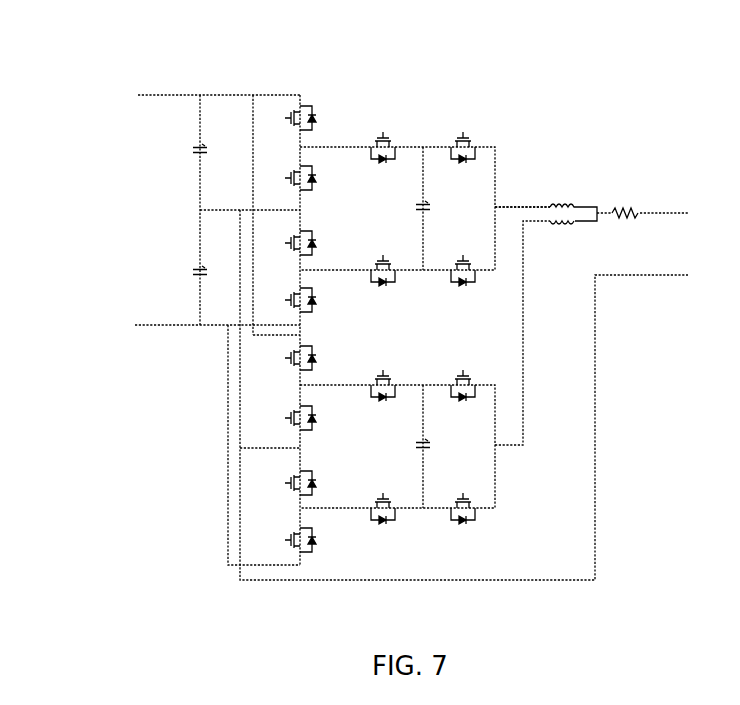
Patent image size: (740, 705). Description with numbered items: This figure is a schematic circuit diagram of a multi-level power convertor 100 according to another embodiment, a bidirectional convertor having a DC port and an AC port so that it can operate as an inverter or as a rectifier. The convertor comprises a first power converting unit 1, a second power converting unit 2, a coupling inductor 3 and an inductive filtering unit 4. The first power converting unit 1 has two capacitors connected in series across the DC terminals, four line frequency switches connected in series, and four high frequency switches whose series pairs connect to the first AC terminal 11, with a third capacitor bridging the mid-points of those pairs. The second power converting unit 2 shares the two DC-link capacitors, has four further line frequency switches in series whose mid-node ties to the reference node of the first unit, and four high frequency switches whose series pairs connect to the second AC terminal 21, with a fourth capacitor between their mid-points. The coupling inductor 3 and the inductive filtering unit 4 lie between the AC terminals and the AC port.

The multi-level power convertor 100 is at (182, 43).
The first power converting unit 1 is at (292, 88).
The second power converting unit 2 is at (226, 568).
The coupling inductor 3 is at (560, 205).
The inductive filtering unit 4 is at (625, 210).
The first AC terminal 11 is at (515, 205).
The second AC terminal 21 is at (516, 447).